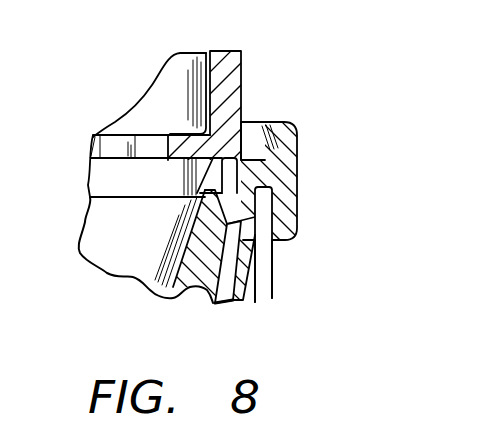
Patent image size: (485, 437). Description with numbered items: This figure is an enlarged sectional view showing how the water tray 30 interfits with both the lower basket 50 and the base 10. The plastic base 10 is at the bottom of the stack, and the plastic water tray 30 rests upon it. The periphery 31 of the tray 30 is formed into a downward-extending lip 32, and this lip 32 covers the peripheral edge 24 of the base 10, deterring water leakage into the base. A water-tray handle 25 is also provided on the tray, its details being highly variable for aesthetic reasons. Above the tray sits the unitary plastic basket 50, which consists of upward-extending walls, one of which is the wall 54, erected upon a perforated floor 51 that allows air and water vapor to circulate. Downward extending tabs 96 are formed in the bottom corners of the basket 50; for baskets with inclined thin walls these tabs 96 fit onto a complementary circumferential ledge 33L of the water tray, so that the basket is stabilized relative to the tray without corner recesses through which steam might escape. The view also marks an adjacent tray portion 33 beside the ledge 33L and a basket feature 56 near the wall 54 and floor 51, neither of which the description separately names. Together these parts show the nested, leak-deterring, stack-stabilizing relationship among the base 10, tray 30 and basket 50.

The plastic base 10 is at (205, 314).
The peripheral edge of the base 24 is at (272, 298).
The water-tray handle 25 is at (240, 252).
The plastic water tray 30 is at (128, 284).
The periphery of the tray 31 is at (283, 170).
The downward-extending lip 32 is at (287, 240).
The lever 33 is at (190, 257).
The circumferential ledge 33L is at (195, 193).
The unitary plastic basket 50 is at (262, 59).
The perforated floor 51 is at (177, 137).
The upward-extending wall 54 is at (243, 87).
The flange 56 is at (117, 142).
The downward extending tabs 96 is at (207, 175).